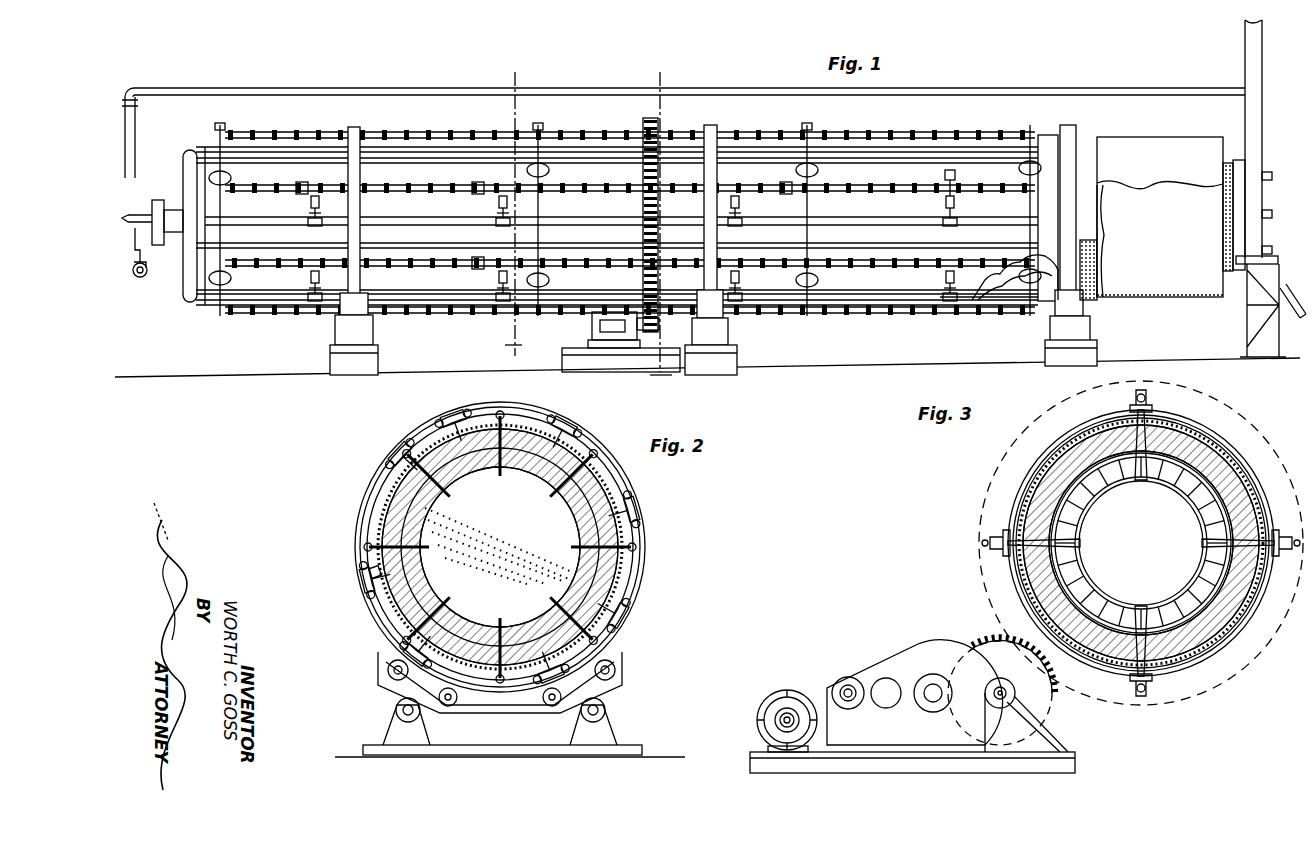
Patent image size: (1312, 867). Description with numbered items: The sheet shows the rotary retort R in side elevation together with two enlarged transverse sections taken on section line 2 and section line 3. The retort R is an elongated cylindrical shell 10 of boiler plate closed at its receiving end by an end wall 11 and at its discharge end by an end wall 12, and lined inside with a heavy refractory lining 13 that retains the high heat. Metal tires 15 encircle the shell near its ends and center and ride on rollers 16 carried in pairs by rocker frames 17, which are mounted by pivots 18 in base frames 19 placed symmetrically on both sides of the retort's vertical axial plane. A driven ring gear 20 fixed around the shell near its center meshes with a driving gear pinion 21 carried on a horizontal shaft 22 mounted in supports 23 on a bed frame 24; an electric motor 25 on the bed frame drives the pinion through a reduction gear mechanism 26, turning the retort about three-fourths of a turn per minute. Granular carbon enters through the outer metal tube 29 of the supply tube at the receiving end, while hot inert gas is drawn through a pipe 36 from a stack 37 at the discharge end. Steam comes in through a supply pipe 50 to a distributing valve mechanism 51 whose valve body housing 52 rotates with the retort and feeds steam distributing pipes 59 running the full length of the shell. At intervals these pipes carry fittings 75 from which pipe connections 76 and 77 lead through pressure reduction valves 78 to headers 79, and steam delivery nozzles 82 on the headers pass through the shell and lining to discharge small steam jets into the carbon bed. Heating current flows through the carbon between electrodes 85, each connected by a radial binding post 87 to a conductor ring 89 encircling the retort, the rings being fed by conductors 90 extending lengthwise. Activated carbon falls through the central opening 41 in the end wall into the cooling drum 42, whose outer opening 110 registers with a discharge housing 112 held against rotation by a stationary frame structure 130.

In FIG. 1, the section line 2— 2 is at (513, 211).
In FIG. 1, the section line 3— 3 is at (661, 224).
In FIG. 1, the cylindrical shell 10 is at (990, 308).
In FIG. 2, the cylindrical shell 10 is at (378, 500).
In FIG. 3, the cylindrical shell 10 is at (1012, 520).
In FIG. 1, the end wall 11 is at (176, 172).
In FIG. 1, the end wall 12 is at (1098, 268).
In FIG. 1, the refractory lining 13 is at (962, 308).
In FIG. 2, the refractory lining 13 is at (395, 500).
In FIG. 3, the refractory lining 13 is at (1252, 618).
In FIG. 1, the metal tires 15 is at (348, 132).
In FIG. 2, the metal tires 15 is at (382, 622).
In FIG. 1, the rollers 16 is at (343, 312).
In FIG. 2, the rollers 16 is at (386, 672).
In FIG. 1, the rocker frames 17 is at (373, 325).
In FIG. 2, the rocker frames 17 is at (437, 698).
In FIG. 2, the pivots 18 is at (396, 715).
In FIG. 1, the base frames 19 is at (332, 362).
In FIG. 2, the base frames 19 is at (555, 755).
In FIG. 1, the driven ring gear 20 is at (643, 124).
In FIG. 3, the driven ring gear 20 is at (980, 580).
In FIG. 1, the driving gear pinion 21 is at (592, 322).
In FIG. 3, the driving gear pinion 21 is at (1050, 706).
In FIG. 3, the horizontal shaft 22 is at (970, 716).
In FIG. 3, the supports 23 is at (1062, 735).
In FIG. 1, the bed frame 24 is at (628, 372).
In FIG. 1, the electric motor 25 is at (1284, 302).
In FIG. 3, the electric motor 25 is at (780, 690).
In FIG. 1, the reduction gear mechanism 26 is at (600, 348).
In FIG. 3, the reduction gear mechanism 26 is at (878, 660).
In FIG. 1, the outer metal tube 29 is at (138, 214).
In FIG. 1, the pipe 36 is at (1140, 88).
In FIG. 1, the stack 37 is at (1245, 47).
In FIG. 1, the central opening 41 is at (1105, 220).
In FIG. 1, the cooling drum 42 is at (1190, 137).
In FIG. 1, the supply pipe 50 is at (142, 278).
In FIG. 1, the distributing valve mechanism 51 is at (158, 198).
In FIG. 2, the distributing valve mechanism 51 is at (636, 598).
In FIG. 1, the valve body housing 52 is at (173, 234).
In FIG. 1, the steam distributing pipes 59 is at (870, 142).
In FIG. 2, the steam distributing pipes 59 is at (555, 428).
In FIG. 1, the fittings 75 is at (310, 224).
In FIG. 1, the pipe connection 76 is at (955, 204).
In FIG. 2, the pipe connection 76 is at (362, 588).
In FIG. 1, the pipe connection 77 is at (956, 175).
In FIG. 2, the pipe connection 77 is at (358, 548).
In FIG. 1, the pressure reduction valves 78 is at (311, 202).
In FIG. 2, the pressure reduction valves 78 is at (366, 570).
In FIG. 1, the headers 79 is at (300, 182).
In FIG. 2, the steam delivery nozzles 82 is at (542, 500).
In FIG. 3, the electrodes 85 is at (1195, 492).
In FIG. 3, the binding post 87 is at (1152, 420).
In FIG. 1, the conductor ring 89 is at (222, 318).
In FIG. 3, the conductor ring 89 is at (1020, 476).
In FIG. 1, the conductors 90 is at (410, 221).
In FIG. 3, the conductors 90 is at (984, 543).
In FIG. 1, the opening 110 is at (1222, 230).
In FIG. 1, the discharge housing 112 is at (1264, 176).
In FIG. 1, the stationary frame structure 130 is at (1247, 332).
In FIG. 1, the rotary retort R is at (436, 128).
In FIG. 2, the rotary retort R is at (670, 558).
In FIG. 3, the rotary retort R is at (1238, 440).